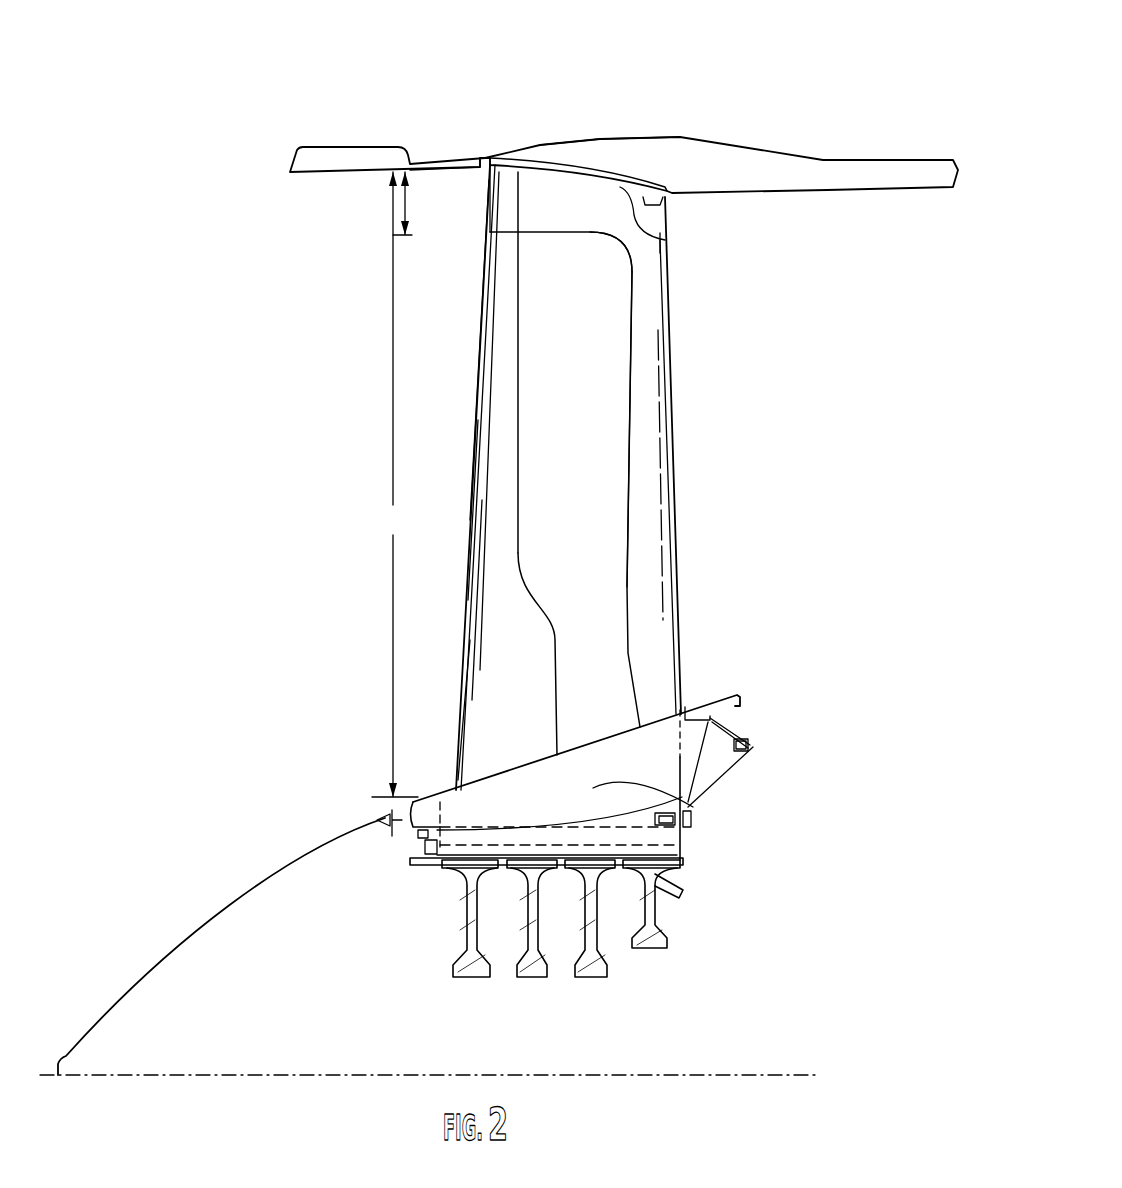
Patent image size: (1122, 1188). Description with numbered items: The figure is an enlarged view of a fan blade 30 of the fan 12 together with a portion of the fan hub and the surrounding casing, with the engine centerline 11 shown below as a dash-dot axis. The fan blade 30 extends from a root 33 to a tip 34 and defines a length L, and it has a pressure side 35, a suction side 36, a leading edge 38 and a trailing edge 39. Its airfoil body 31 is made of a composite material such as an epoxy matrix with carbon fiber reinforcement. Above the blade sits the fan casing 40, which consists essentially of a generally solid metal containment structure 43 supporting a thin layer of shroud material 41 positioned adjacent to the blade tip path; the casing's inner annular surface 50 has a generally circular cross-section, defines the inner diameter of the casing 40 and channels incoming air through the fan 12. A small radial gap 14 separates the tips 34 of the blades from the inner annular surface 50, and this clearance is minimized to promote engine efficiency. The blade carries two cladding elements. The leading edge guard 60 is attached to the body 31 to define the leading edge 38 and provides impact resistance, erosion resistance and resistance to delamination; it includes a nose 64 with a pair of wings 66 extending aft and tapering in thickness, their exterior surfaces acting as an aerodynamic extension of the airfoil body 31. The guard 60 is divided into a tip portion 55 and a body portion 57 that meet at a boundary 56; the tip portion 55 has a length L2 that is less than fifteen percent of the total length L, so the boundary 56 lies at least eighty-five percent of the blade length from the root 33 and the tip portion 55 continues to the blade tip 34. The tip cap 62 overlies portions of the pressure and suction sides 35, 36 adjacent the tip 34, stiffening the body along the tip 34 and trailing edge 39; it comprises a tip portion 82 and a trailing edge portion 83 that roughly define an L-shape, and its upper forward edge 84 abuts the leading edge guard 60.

The engine centerline axis 11 is at (310, 1073).
The fan 12 is at (240, 866).
The radial gap 14 is at (472, 163).
The fan blade 30 is at (521, 474).
The airfoil body 31 is at (490, 687).
The root 33 is at (690, 803).
The tip 34 is at (663, 240).
The pressure side 35 is at (580, 493).
The suction side 36 is at (477, 453).
The leading edge 38 is at (484, 344).
The trailing edge 39 is at (672, 462).
The fan casing 40 is at (624, 142).
The shroud material 41 is at (596, 172).
The containment structure 43 is at (580, 147).
The inner annular surface 50 is at (667, 205).
The tip portion 55 is at (490, 207).
The boundary 56 is at (490, 232).
The body portion 57 is at (498, 313).
The leading edge guard 60 is at (388, 474).
The tip cap 62 is at (687, 353).
The nose 64 is at (473, 538).
The wings 66 is at (520, 596).
The tip portion 82 is at (590, 215).
The trailing edge portion 83 is at (640, 373).
The upper forward edge 84 is at (520, 207).
The length L is at (395, 484).
The length L2 is at (407, 204).